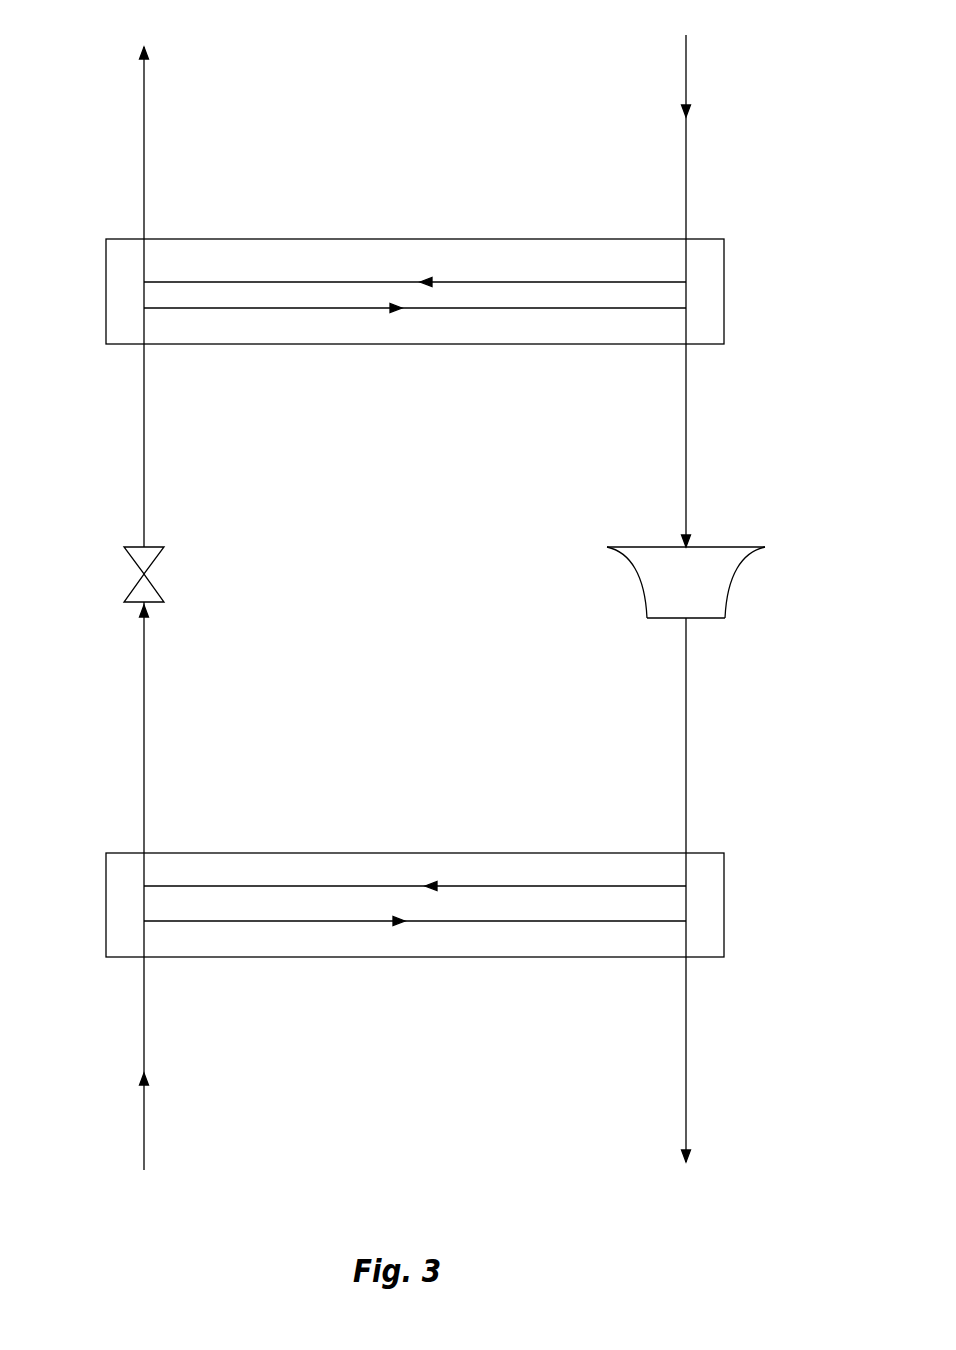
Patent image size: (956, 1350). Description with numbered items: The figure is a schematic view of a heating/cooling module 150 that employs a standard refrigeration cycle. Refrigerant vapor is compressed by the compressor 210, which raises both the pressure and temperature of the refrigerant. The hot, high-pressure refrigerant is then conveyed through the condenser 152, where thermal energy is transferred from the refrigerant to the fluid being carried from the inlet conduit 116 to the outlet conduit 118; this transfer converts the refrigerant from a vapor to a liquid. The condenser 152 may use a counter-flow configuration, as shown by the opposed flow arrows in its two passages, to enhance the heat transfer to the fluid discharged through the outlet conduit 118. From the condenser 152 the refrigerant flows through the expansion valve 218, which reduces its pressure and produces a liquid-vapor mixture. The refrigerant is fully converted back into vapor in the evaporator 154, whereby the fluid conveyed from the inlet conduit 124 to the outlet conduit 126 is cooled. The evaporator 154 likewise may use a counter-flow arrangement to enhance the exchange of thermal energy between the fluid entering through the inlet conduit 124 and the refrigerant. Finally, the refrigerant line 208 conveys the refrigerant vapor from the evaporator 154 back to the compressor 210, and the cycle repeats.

The heating/cooling module 150 is at (412, 84).
The outlet conduit 126 is at (142, 141).
The inlet conduit 124 is at (688, 150).
The evaporator 154 is at (724, 322).
The refrigerant line 208 is at (688, 473).
The expansion valve 218 is at (128, 563).
The compressor 210 is at (730, 582).
The condenser 152 is at (724, 940).
The inlet conduit 116 is at (142, 1052).
The outlet conduit 118 is at (688, 1085).